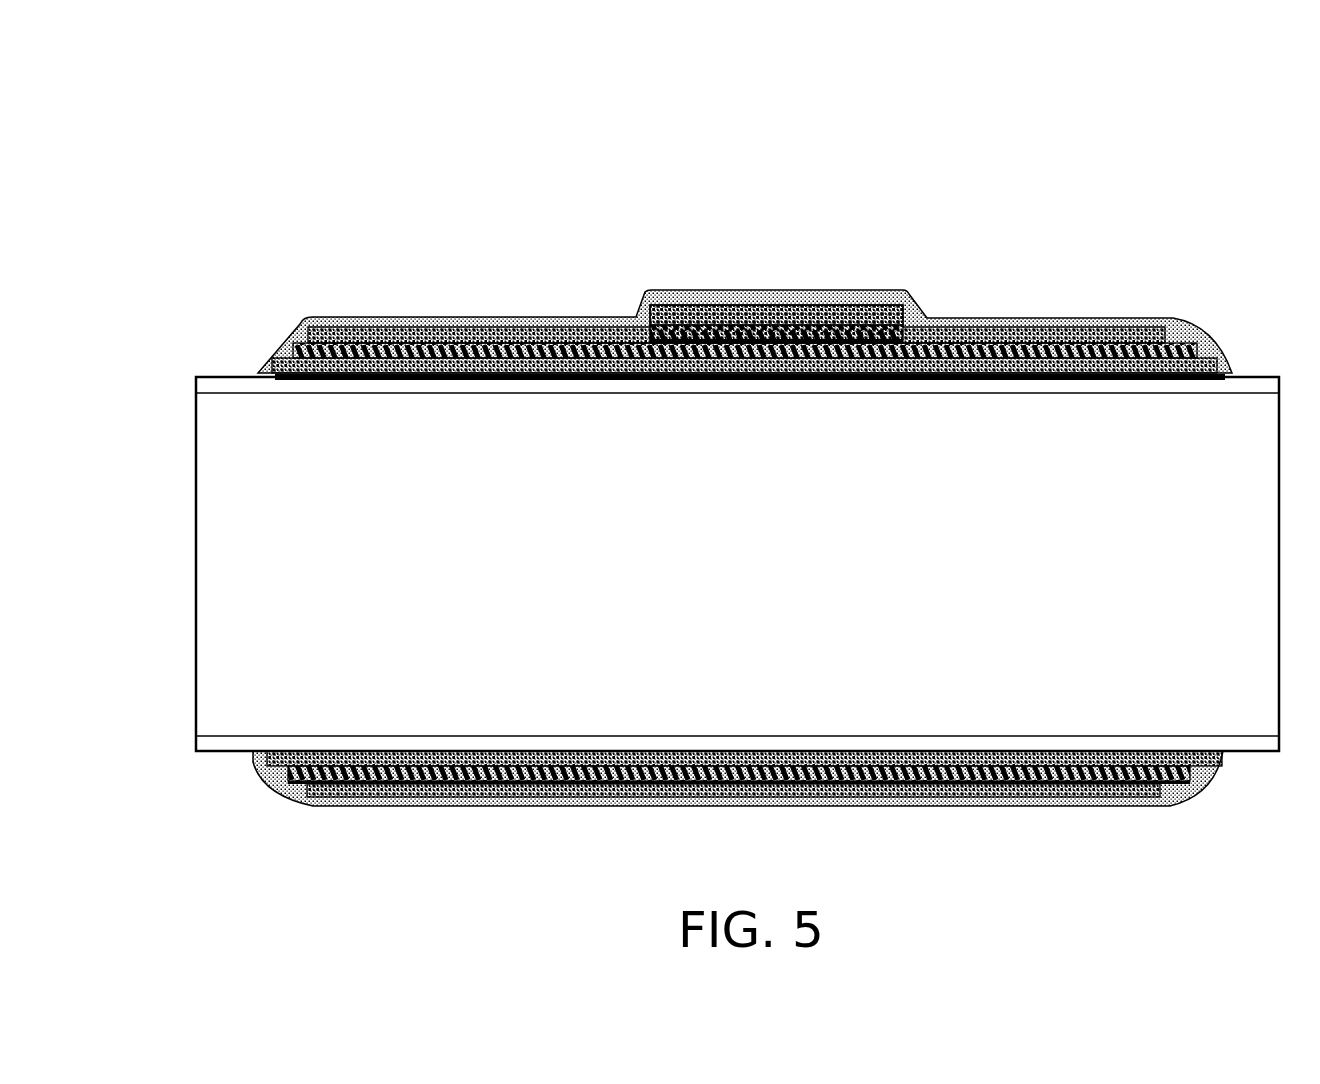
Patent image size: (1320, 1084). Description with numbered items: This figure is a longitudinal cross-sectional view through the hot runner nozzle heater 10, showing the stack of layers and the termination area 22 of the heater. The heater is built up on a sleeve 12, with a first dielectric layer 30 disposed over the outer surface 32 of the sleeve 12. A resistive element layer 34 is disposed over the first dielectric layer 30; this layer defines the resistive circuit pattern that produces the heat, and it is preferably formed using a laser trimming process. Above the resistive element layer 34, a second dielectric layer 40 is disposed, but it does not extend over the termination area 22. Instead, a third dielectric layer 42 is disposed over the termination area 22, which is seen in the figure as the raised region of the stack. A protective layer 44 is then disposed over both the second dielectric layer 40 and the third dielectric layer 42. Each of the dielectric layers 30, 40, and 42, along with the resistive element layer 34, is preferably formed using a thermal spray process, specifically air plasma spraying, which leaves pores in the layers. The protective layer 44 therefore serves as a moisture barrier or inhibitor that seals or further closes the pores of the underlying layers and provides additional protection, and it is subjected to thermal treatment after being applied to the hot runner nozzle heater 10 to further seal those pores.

The hot runner nozzle heater 10 is at (328, 171).
The sleeve 12 is at (262, 742).
The termination area 22 is at (888, 324).
The first dielectric layer 30 is at (627, 767).
The outer surface 32 is at (1252, 373).
The resistive element layer 34 is at (408, 782).
The second dielectric layer 40 is at (488, 335).
The third dielectric layer 42 is at (736, 318).
The protective layer 44 is at (385, 327).